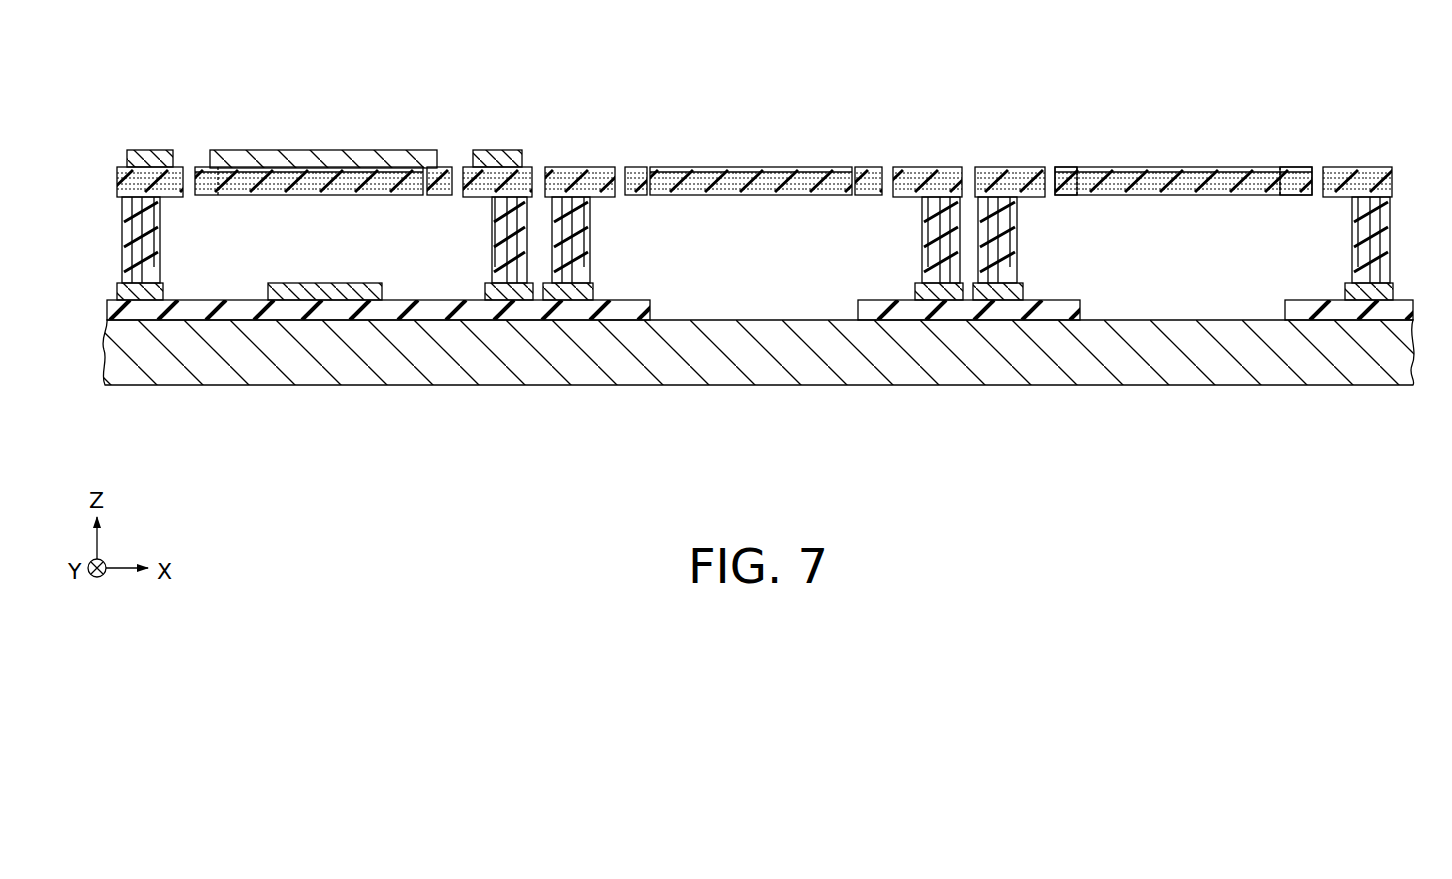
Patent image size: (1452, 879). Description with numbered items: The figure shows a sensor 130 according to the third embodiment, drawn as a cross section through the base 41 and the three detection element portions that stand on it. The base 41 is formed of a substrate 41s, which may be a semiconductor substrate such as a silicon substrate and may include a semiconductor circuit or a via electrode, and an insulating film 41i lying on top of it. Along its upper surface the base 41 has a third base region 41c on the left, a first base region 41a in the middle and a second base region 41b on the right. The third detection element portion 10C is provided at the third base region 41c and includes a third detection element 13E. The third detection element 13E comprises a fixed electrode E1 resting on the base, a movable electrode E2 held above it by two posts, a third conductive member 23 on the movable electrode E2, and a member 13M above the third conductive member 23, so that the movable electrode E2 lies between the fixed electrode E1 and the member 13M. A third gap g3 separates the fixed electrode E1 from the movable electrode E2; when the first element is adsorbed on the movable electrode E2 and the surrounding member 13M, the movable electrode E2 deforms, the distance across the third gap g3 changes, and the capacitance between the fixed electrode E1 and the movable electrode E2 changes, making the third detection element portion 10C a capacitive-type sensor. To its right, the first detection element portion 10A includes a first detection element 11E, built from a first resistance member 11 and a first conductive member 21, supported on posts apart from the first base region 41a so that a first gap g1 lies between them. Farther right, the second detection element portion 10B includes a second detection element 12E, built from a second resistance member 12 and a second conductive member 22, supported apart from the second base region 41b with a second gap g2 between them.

The member 13M is at (283, 151).
The movable electrode E2 is at (336, 170).
The third conductive member 23 is at (380, 170).
The third detection element 13E is at (415, 142).
The third detection element portion 10C is at (325, 182).
The first resistance member 11 is at (741, 170).
The first conductive member 21 is at (799, 172).
The first detection element 11E is at (860, 160).
The first detection element portion 10A is at (754, 192).
The second resistance member 12 is at (1157, 168).
The second conductive member 22 is at (1220, 168).
The second detection element 12E is at (1274, 158).
The second detection element portion 10B is at (1208, 190).
The sensor 130 is at (1398, 150).
The fixed electrode E1 is at (282, 283).
The third gap g3 is at (326, 260).
The first gap g1 is at (700, 277).
The second gap g2 is at (1140, 280).
The base 41 is at (758, 399).
The substrate 41s is at (161, 355).
The insulating film 41i is at (242, 308).
The first base region 41a is at (750, 360).
The second base region 41b is at (1200, 360).
The third base region 41c is at (379, 363).